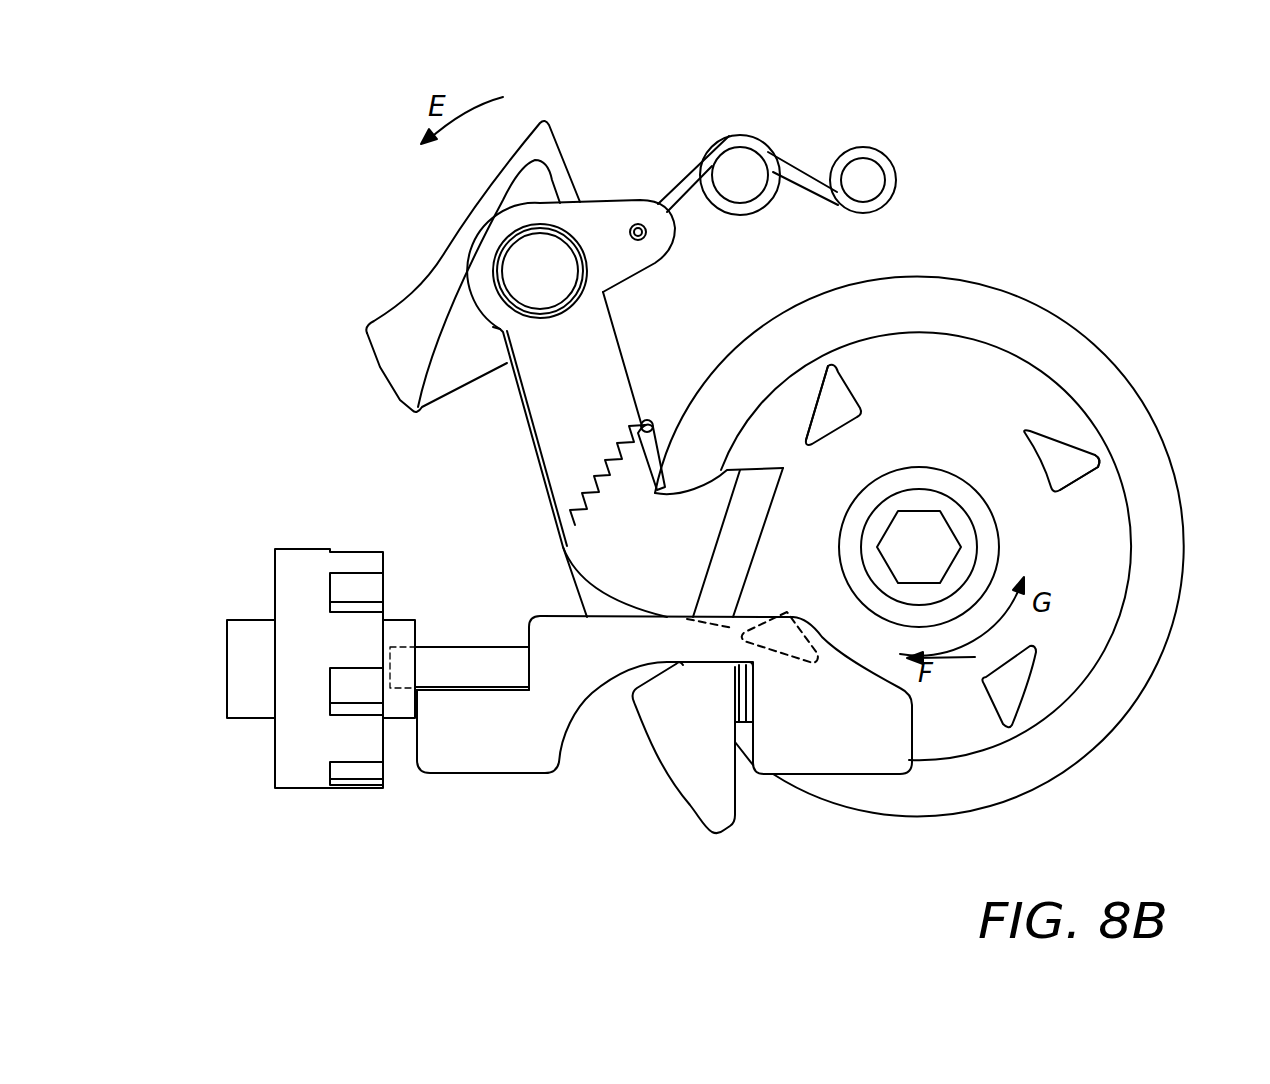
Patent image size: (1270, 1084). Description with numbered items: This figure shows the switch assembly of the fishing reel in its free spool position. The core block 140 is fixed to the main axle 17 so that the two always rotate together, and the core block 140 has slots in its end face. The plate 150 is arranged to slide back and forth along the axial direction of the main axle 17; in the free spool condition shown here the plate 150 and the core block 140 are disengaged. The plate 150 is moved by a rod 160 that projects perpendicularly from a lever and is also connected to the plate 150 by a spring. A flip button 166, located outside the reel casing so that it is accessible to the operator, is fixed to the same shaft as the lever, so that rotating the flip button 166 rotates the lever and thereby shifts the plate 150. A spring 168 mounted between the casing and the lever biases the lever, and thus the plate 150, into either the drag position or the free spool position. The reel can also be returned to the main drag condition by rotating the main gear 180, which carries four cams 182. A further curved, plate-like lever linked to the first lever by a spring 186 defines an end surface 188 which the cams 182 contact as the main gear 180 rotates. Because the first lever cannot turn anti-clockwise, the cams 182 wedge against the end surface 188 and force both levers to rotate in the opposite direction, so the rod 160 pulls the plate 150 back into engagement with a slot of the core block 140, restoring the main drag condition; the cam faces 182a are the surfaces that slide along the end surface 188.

The main axle 17 is at (458, 663).
The core block 140 is at (303, 577).
The plate 150 is at (497, 760).
The rod 160 is at (745, 708).
The flip button 166 is at (393, 358).
The spring 168 is at (757, 147).
The main gear 180 is at (1110, 574).
The cams 182 is at (1025, 436).
The tooth face 182a is at (817, 397).
The spring 186 is at (589, 495).
The end surface 188 is at (758, 553).